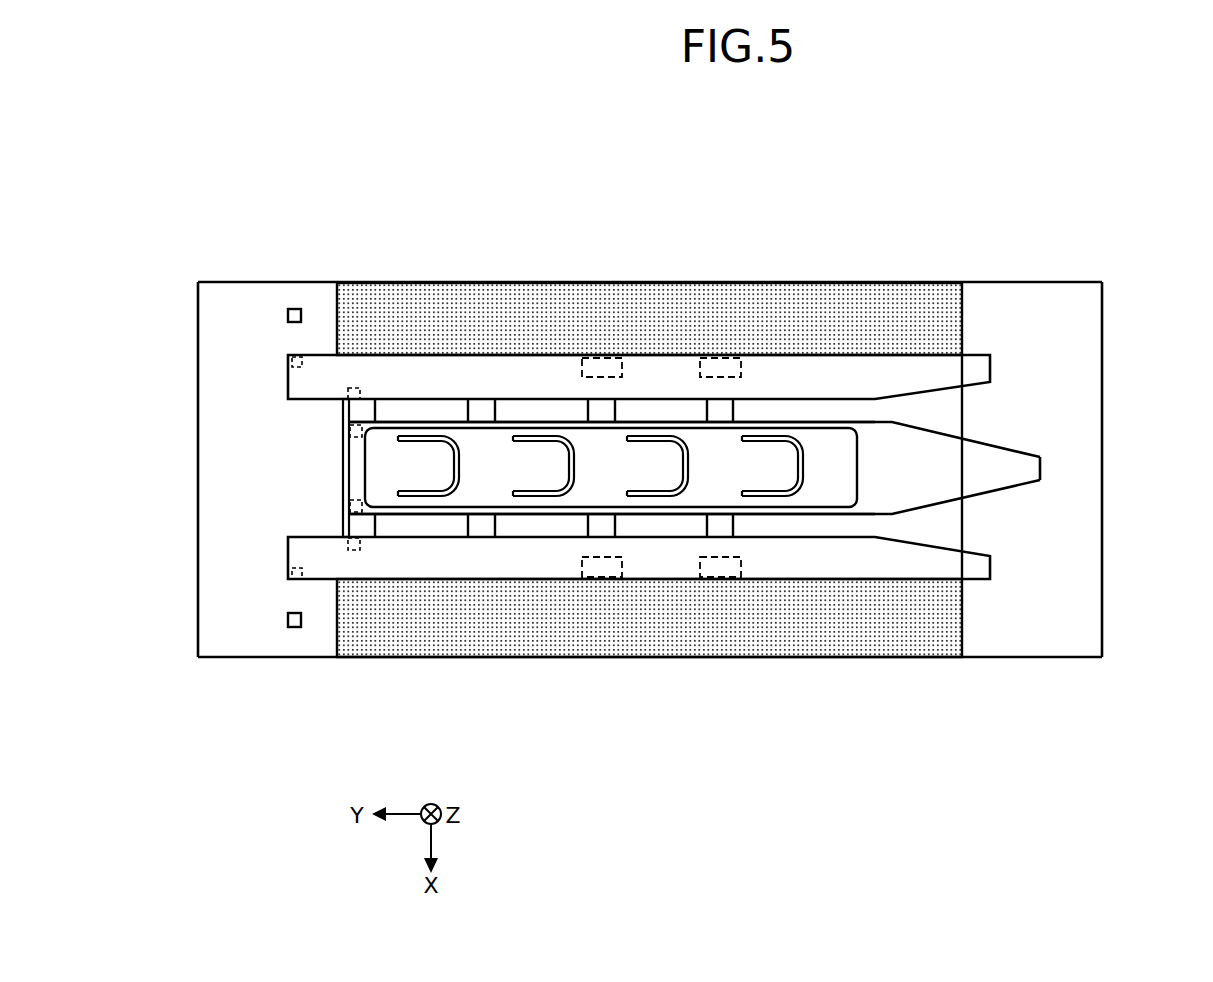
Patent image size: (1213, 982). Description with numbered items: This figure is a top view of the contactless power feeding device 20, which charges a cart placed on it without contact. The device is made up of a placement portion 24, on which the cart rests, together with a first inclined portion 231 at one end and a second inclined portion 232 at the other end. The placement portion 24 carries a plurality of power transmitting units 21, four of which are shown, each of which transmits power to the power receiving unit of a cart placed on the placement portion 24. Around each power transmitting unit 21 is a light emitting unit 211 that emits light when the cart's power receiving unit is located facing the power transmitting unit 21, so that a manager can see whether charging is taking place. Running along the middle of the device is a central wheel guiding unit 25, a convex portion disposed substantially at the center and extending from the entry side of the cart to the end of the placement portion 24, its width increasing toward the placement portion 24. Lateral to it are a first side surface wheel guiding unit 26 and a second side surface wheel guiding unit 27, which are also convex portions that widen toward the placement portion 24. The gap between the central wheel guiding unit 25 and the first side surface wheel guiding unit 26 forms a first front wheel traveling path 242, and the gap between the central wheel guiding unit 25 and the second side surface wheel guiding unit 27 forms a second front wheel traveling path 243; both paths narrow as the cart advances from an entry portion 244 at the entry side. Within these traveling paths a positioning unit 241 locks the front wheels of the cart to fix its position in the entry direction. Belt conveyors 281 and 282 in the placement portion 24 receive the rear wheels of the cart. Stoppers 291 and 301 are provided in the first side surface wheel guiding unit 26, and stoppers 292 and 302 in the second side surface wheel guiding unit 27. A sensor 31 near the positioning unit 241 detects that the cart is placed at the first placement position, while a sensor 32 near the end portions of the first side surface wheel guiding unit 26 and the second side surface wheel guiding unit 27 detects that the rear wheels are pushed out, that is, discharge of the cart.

The contactless power feeding device 20 is at (934, 136).
The placement portion 24 is at (492, 168).
The power transmitting unit 21 is at (420, 455).
The light emitting unit 211 is at (422, 494).
The positioning unit 241 is at (372, 410).
The first front wheel traveling path 242 is at (820, 520).
The second front wheel traveling path 243 is at (808, 405).
The entry portion 244 is at (1138, 479).
The central wheel guiding unit 25 is at (918, 482).
The first side surface wheel guiding unit 26 is at (850, 570).
The second side surface wheel guiding unit 27 is at (832, 378).
The belt conveyor 281 is at (882, 625).
The belt conveyor 282 is at (893, 305).
The stopper 291 is at (598, 579).
The stopper 292 is at (598, 356).
The stopper 301 is at (712, 579).
The stopper 302 is at (712, 356).
The sensor 31 is at (350, 535).
The sensor 32 is at (292, 306).
The first inclined portion 231 is at (1036, 330).
The second inclined portion 232 is at (240, 320).